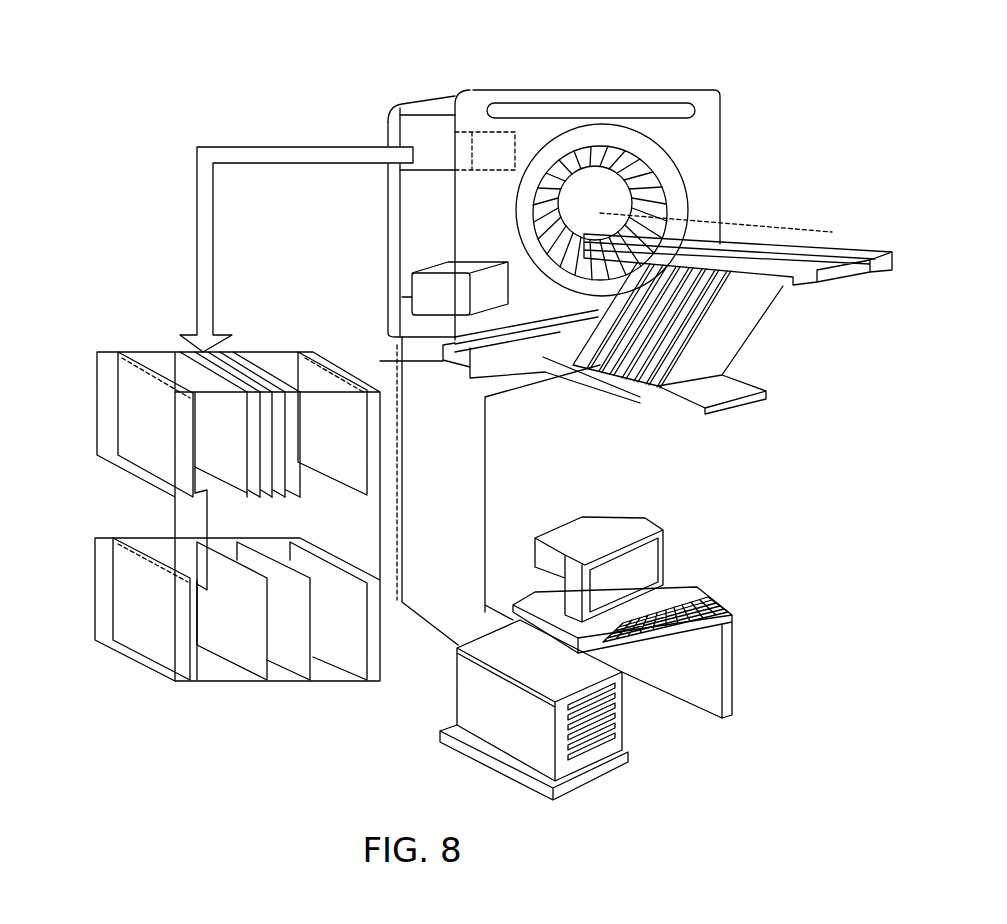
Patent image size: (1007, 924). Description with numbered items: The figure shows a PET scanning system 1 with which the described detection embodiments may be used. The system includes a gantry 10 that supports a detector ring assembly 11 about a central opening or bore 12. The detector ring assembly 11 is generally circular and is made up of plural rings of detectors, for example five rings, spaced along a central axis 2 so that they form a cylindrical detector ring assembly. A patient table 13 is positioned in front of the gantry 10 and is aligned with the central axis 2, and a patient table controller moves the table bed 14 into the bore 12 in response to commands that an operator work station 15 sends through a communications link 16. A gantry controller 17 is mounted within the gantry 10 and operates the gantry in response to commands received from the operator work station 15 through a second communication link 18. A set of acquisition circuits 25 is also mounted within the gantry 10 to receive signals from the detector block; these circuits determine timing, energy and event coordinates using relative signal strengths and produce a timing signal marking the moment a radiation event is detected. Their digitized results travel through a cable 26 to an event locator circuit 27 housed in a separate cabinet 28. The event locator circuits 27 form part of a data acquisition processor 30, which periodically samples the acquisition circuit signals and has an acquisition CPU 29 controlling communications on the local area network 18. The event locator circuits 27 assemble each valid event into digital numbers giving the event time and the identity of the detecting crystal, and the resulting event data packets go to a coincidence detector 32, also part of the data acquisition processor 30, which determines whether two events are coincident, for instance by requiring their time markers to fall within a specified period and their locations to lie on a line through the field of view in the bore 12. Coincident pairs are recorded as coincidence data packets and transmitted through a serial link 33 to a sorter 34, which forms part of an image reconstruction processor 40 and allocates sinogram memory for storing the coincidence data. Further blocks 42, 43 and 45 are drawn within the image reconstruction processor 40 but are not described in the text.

The PET scanning system 1 is at (231, 58).
The central axis 2 is at (798, 228).
The gantry 10 is at (729, 139).
The detector ring assembly 11 is at (668, 188).
The bore 12 is at (700, 218).
The patient table 13 is at (777, 317).
The table bed 14 is at (848, 244).
The operator work station 15 is at (661, 515).
The communications link 16 is at (490, 467).
The gantry controller 17 is at (425, 268).
The second communication link 18 is at (405, 502).
The acquisition circuits 25 is at (425, 122).
The cable 26 is at (215, 268).
The event locator circuit 27 is at (204, 443).
The cabinet 28 is at (218, 688).
The acquisition CPU 29 is at (320, 448).
The data acquisition processor 30 is at (137, 349).
The coincidence detector 32 is at (130, 431).
The serial link 33 is at (212, 527).
The sorter 34 is at (128, 614).
The image reconstruction processor 40 is at (122, 529).
The result data set 42 is at (324, 628).
The processed data set 43 is at (213, 619).
The intermediate data set 45 is at (275, 627).